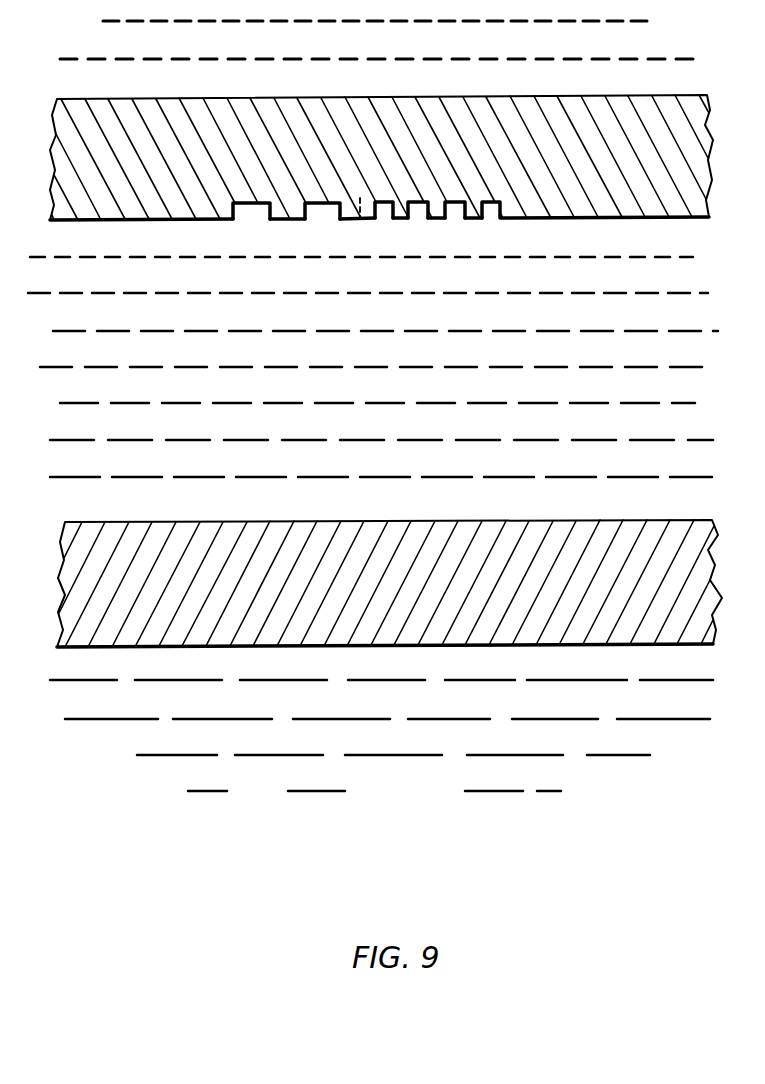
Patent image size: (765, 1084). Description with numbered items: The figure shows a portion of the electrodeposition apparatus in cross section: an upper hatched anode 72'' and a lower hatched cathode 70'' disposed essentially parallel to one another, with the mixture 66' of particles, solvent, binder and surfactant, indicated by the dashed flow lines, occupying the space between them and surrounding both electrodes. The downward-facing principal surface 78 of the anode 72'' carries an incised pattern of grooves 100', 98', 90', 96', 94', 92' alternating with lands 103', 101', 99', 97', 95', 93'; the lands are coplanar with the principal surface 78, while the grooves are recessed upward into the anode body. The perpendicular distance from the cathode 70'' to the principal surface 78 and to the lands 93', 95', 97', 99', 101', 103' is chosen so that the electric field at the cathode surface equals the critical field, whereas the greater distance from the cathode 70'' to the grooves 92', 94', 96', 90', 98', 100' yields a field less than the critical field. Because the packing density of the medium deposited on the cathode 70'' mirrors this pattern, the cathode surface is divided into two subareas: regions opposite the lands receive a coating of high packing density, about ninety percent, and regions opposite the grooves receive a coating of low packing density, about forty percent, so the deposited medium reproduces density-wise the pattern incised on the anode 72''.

The anode 72'' is at (381, 145).
The cathode 70'' is at (389, 567).
The mixture 66' is at (373, 524).
The principal surface 78 is at (97, 221).
The groove 100' is at (229, 196).
The groove 98' is at (310, 195).
The groove 90' is at (360, 176).
The groove 96' is at (417, 176).
The groove 94' is at (473, 176).
The groove 92' is at (595, 197).
The land 103' is at (261, 233).
The land 101' is at (335, 233).
The land 99' is at (352, 241).
The land 97' is at (414, 233).
The land 95' is at (452, 233).
The land 93' is at (499, 233).